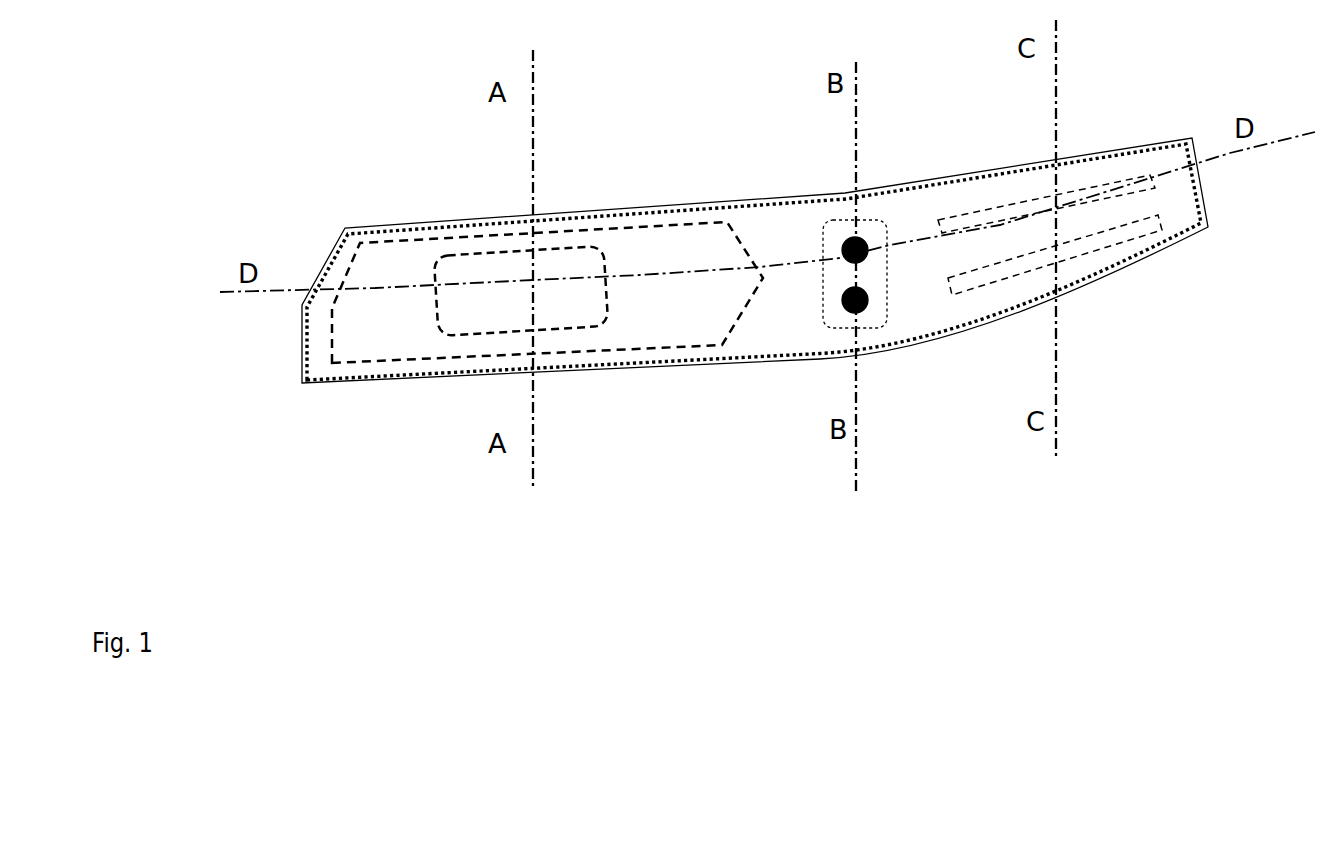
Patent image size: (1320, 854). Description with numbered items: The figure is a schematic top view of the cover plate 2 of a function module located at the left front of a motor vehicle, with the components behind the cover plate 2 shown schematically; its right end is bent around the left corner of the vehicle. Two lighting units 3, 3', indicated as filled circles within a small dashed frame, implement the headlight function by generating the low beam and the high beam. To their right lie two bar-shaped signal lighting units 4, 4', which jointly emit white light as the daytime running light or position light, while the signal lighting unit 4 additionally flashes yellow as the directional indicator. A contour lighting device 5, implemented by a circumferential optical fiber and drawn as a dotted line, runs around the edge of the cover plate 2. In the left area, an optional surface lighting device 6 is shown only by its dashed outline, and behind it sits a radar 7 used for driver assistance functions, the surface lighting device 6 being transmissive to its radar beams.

The cover plate 2 is at (680, 370).
The lighting unit 3 is at (864, 222).
The lighting unit 3' is at (887, 350).
The signal lighting unit 4 is at (1055, 156).
The signal lighting unit 4' is at (1078, 286).
The contour lighting device 5 is at (767, 358).
The surface lighting device 6 is at (670, 240).
The radar 7 is at (458, 265).